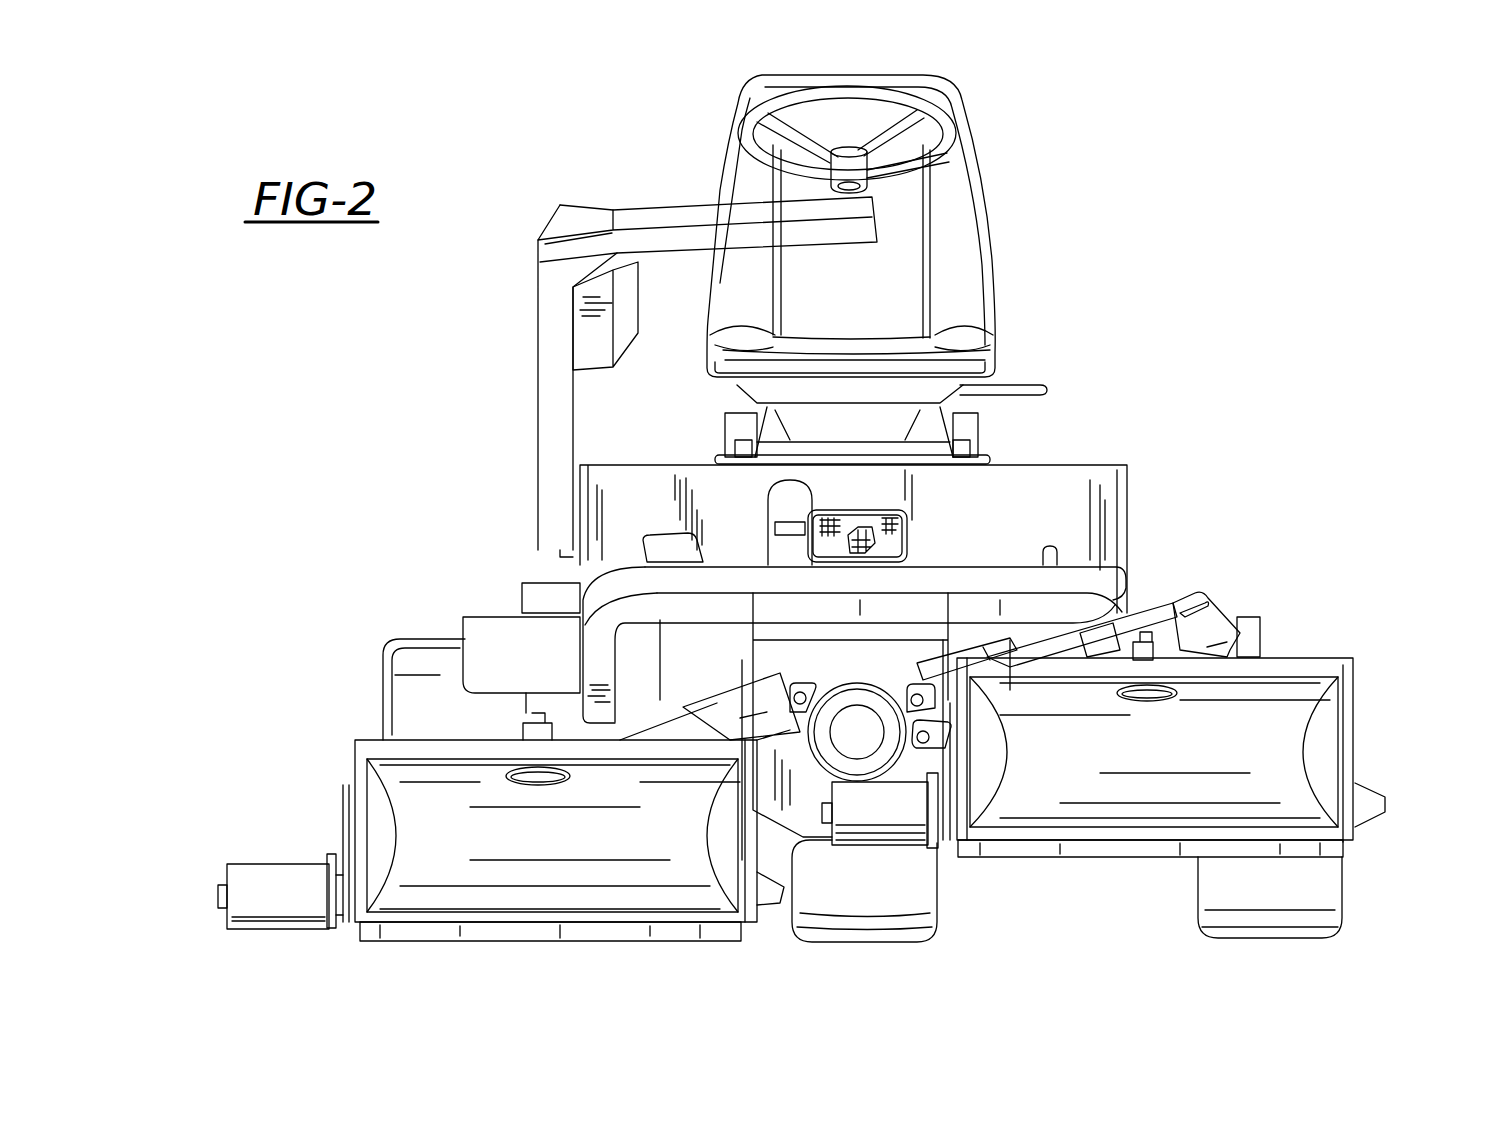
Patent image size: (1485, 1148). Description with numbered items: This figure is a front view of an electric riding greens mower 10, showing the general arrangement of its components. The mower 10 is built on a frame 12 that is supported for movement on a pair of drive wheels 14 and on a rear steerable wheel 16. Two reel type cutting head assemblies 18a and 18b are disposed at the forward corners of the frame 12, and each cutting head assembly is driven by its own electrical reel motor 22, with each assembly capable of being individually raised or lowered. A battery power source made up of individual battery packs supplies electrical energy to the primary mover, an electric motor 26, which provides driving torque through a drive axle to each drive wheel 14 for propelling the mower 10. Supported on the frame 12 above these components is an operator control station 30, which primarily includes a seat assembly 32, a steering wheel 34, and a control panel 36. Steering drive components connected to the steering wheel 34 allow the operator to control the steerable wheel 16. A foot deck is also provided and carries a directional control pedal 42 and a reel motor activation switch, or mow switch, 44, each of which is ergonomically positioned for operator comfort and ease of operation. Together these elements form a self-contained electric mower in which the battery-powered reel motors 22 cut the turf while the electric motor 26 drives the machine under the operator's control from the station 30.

The electric riding mower 10 is at (1267, 277).
The frame 12 is at (1123, 588).
The drive wheels 14 is at (1327, 893).
The rear steerable wheel 16 is at (922, 903).
The reel type cutting head assembly 18a is at (372, 782).
The reel type cutting head assembly 18b is at (1358, 698).
The electrical reel motor 22 is at (252, 876).
The electric motor 26 is at (876, 747).
The operator control station 30 is at (989, 199).
The seat assembly 32 is at (984, 294).
The steering wheel 34 is at (747, 137).
The control panel 36 is at (638, 330).
The directional control pedal 42 is at (643, 540).
The reel motor activation switch 44 is at (775, 503).